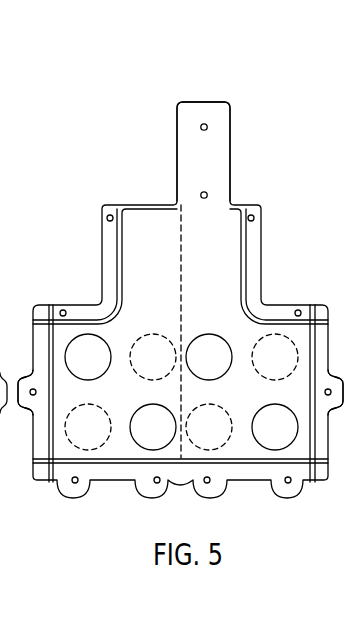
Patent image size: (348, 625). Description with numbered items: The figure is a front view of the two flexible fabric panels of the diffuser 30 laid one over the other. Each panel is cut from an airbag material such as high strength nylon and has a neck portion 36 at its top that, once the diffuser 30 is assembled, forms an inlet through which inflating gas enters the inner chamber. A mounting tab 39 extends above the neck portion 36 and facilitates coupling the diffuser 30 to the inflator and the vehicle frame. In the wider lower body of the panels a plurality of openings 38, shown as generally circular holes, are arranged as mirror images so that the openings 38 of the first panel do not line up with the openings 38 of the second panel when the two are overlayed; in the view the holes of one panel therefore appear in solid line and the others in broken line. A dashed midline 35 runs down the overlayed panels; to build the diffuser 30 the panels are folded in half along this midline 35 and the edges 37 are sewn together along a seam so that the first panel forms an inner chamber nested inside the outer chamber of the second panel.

The diffuser 30 is at (228, 82).
The midline 35 is at (181, 245).
The neck portion 36 is at (223, 253).
The edge 37 is at (315, 343).
The opening 38 is at (152, 346).
The mounting tab 39 is at (217, 158).